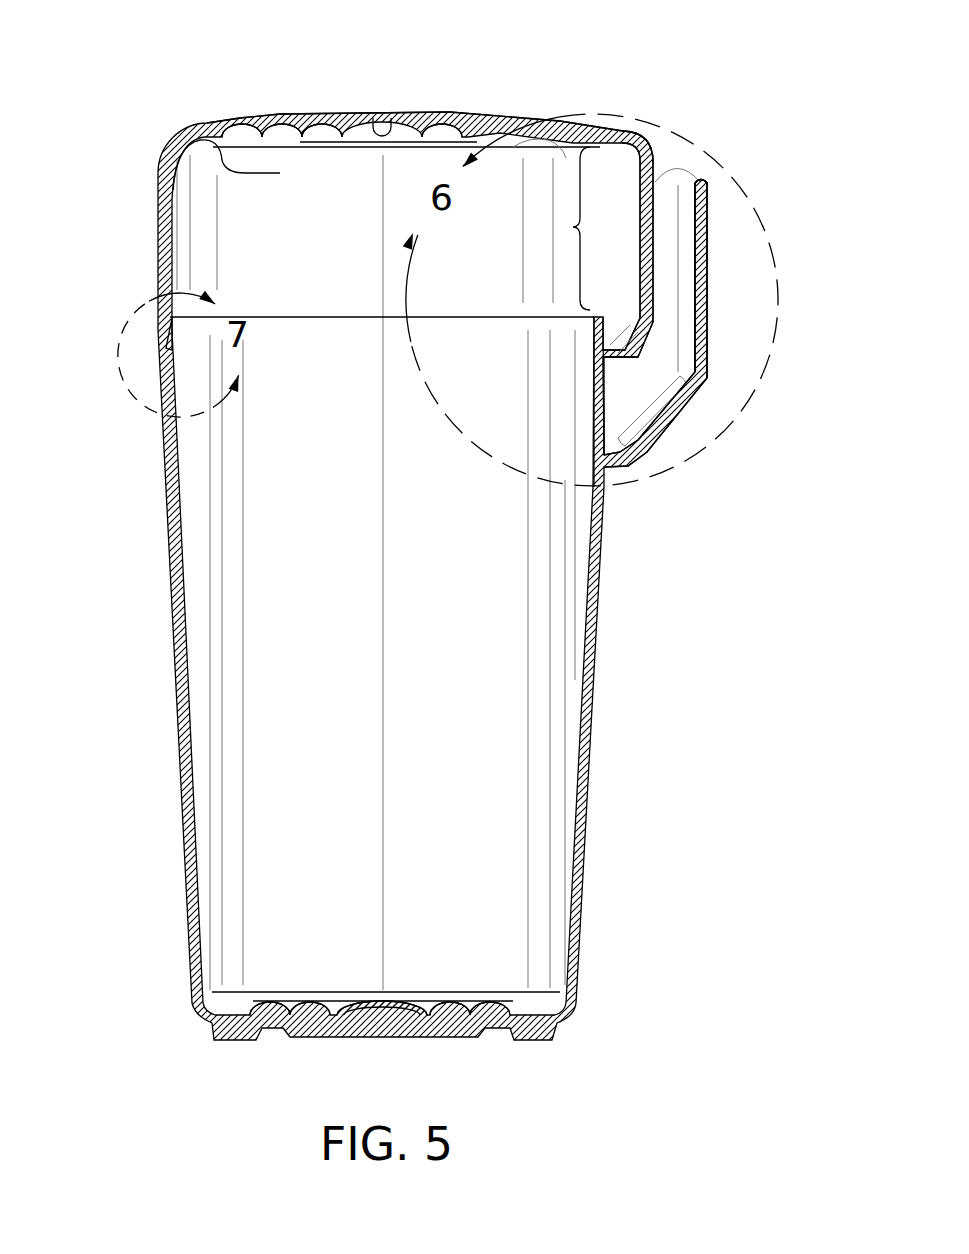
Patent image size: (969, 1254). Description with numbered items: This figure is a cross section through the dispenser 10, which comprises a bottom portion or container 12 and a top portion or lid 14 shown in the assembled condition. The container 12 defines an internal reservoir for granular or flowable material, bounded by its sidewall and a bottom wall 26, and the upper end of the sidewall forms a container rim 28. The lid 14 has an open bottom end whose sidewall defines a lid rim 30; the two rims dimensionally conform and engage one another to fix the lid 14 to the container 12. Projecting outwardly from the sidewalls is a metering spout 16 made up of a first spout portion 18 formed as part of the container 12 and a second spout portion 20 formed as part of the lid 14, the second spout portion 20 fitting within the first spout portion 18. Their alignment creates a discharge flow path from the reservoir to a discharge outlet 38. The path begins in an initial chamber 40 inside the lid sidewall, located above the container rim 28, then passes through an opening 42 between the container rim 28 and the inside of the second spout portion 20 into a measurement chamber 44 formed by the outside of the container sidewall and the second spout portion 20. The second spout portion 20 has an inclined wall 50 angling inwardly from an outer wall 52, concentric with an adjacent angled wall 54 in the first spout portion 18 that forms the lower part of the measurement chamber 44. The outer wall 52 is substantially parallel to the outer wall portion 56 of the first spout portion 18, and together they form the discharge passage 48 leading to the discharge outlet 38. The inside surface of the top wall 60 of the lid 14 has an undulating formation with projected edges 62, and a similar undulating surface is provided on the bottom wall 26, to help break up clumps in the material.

The dispenser 10 is at (114, 57).
The container 12 is at (590, 610).
The lid 14 is at (158, 192).
The metering spout 16 is at (739, 391).
The first spout portion 18 is at (725, 279).
The second spout portion 20 is at (670, 216).
The bottom wall 26 is at (313, 1012).
The container rim 28 is at (216, 317).
The lid rim 30 is at (216, 317).
The discharge outlet 38 is at (674, 153).
The initial chamber 40 is at (573, 227).
The opening 42 is at (617, 283).
The measurement chamber 44 is at (655, 407).
The discharge passage 48 is at (680, 250).
The inclined wall 50 is at (645, 345).
The outer wall 52 is at (650, 205).
The angled wall 54 is at (653, 412).
The outer wall portion 56 is at (707, 308).
The top wall 60 is at (391, 125).
The projected edges 62 is at (333, 147).